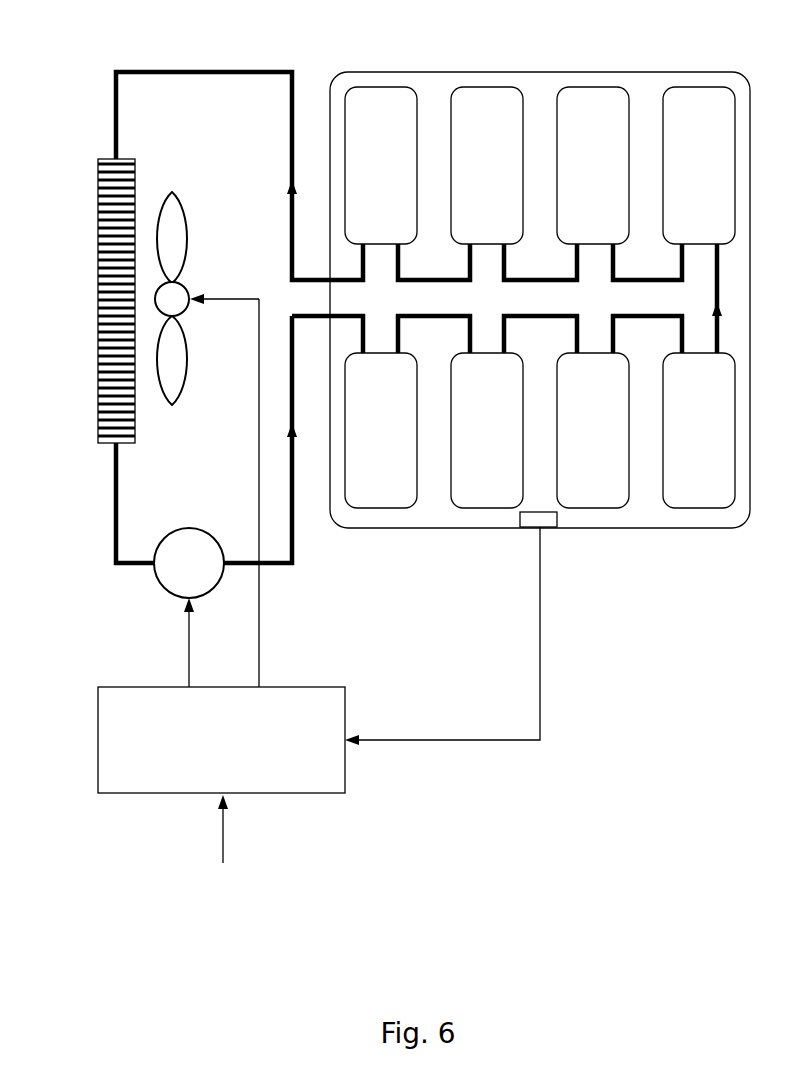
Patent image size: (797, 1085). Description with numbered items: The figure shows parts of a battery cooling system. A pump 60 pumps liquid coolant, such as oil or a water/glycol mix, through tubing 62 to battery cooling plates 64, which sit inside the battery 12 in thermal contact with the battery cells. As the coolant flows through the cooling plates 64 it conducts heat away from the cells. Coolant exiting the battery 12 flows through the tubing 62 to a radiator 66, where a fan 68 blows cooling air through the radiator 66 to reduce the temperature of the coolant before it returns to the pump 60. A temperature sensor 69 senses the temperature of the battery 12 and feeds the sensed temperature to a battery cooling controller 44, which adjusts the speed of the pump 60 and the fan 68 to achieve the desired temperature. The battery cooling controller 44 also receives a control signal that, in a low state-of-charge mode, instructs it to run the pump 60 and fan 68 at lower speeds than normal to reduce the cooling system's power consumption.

The battery 12 is at (541, 72).
The battery cooling controller 44 is at (310, 794).
The pump 60 is at (162, 587).
The tubing 62 is at (200, 70).
The battery cooling plates 64 is at (700, 90).
The radiator 66 is at (98, 228).
The fan 68 is at (190, 230).
The temperature sensor 69 is at (553, 528).